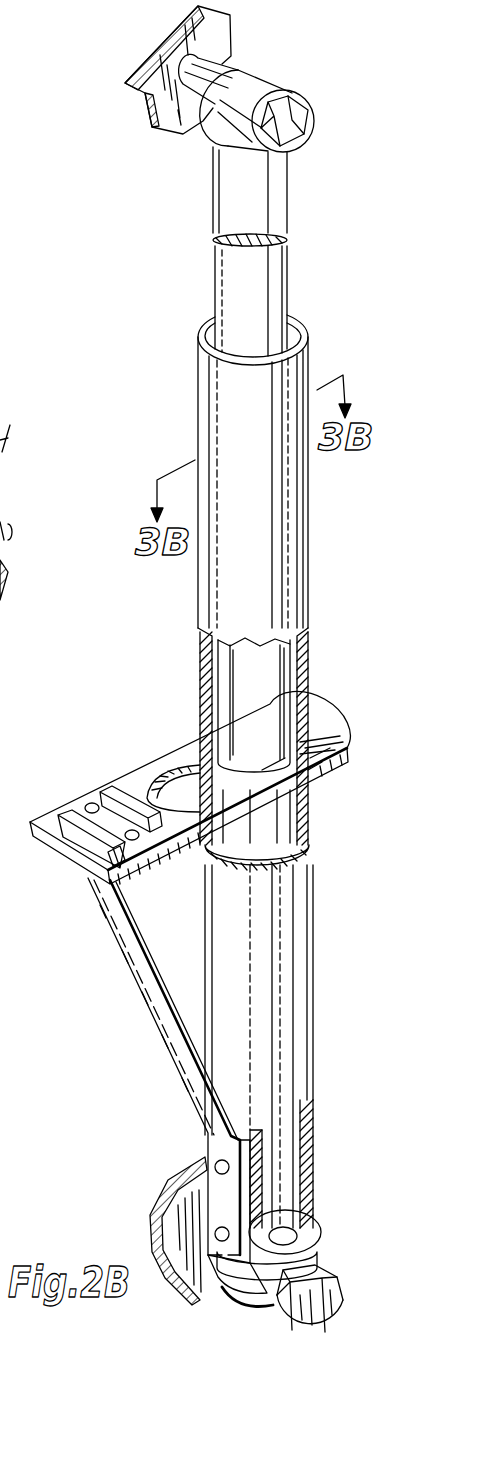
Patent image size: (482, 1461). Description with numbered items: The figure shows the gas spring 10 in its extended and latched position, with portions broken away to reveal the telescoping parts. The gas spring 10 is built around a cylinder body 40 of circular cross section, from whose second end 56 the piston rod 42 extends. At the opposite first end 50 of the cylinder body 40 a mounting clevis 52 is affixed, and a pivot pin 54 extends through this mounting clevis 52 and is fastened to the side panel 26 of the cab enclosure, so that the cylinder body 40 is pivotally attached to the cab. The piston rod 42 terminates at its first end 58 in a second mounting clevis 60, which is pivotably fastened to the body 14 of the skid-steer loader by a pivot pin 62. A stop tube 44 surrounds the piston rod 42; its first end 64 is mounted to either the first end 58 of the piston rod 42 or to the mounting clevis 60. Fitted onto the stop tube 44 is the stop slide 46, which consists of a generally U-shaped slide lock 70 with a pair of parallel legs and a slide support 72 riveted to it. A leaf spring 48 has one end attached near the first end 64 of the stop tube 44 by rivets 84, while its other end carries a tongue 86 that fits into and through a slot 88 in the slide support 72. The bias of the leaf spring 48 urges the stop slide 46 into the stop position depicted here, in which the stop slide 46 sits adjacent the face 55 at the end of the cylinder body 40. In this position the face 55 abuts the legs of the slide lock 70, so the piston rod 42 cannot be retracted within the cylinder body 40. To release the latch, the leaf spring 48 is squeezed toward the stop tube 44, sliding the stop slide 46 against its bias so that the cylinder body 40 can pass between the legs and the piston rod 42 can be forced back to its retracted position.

The gas spring 10 is at (183, 566).
The body 14 is at (166, 1185).
The side panel 26 is at (203, 35).
The cylinder body 40 is at (262, 293).
The piston rod 42 is at (283, 1143).
The stop tube 44 is at (296, 458).
The stop slide 46 is at (55, 843).
The leaf spring 48 is at (152, 998).
The first end 50 is at (265, 183).
The mounting clevis 52 is at (262, 81).
The pivot pin 54 is at (224, 68).
The face 55 is at (219, 782).
The second end 56 is at (292, 758).
The first end 58 is at (282, 1220).
The mounting clevis 60 is at (265, 1305).
The pivot pin 62 is at (323, 1305).
The first end 64 is at (307, 1252).
The slide lock 70 is at (323, 733).
The slide support 72 is at (84, 802).
The rivets 84 is at (207, 1137).
The tongue 86 is at (67, 828).
The slot 88 is at (125, 860).